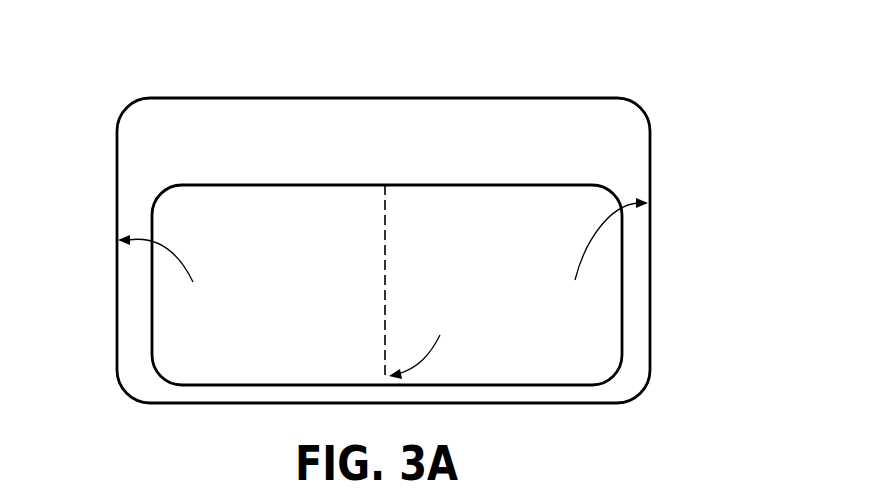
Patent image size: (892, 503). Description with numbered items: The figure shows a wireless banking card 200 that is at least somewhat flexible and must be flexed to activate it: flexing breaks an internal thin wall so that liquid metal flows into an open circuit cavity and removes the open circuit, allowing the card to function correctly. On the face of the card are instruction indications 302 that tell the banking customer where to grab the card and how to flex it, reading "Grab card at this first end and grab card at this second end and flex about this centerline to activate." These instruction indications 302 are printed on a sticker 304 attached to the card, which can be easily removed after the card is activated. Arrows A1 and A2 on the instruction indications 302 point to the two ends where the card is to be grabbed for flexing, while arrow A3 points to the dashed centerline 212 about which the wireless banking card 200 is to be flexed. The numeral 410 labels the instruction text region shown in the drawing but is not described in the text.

The wireless banking card 200 is at (264, 117).
The centerline 212 is at (597, 140).
The instruction indications 302 is at (429, 224).
The sticker 304 is at (548, 178).
The activation instruction text 410 is at (198, 220).
The arrow A1 is at (170, 252).
The arrow A2 is at (595, 235).
The arrow A3 is at (420, 363).